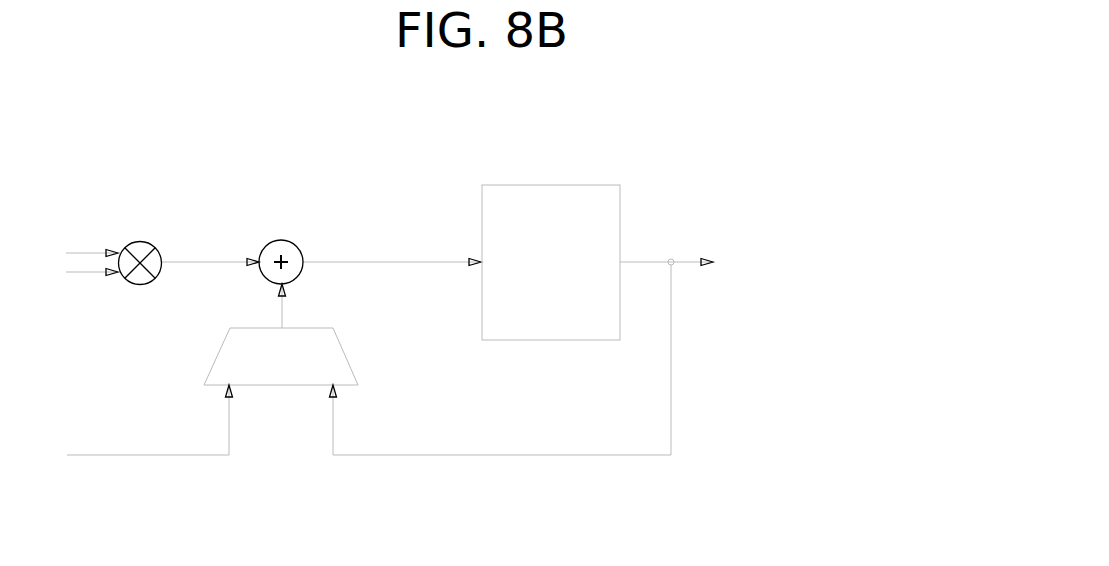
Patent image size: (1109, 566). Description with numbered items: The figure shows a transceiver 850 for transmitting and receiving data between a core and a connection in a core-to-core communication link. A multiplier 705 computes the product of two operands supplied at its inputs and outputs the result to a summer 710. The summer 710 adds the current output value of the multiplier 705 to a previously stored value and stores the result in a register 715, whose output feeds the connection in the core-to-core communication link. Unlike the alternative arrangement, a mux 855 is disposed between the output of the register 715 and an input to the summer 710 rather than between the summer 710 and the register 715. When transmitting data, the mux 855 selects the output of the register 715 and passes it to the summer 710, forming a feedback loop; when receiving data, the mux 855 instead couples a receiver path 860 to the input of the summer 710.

The transceiver 850 is at (225, 110).
The multiplier 705 is at (141, 241).
The summer 710 is at (302, 250).
The register 715 is at (565, 294).
The mux 855 is at (295, 379).
The receiver path 860 is at (152, 455).